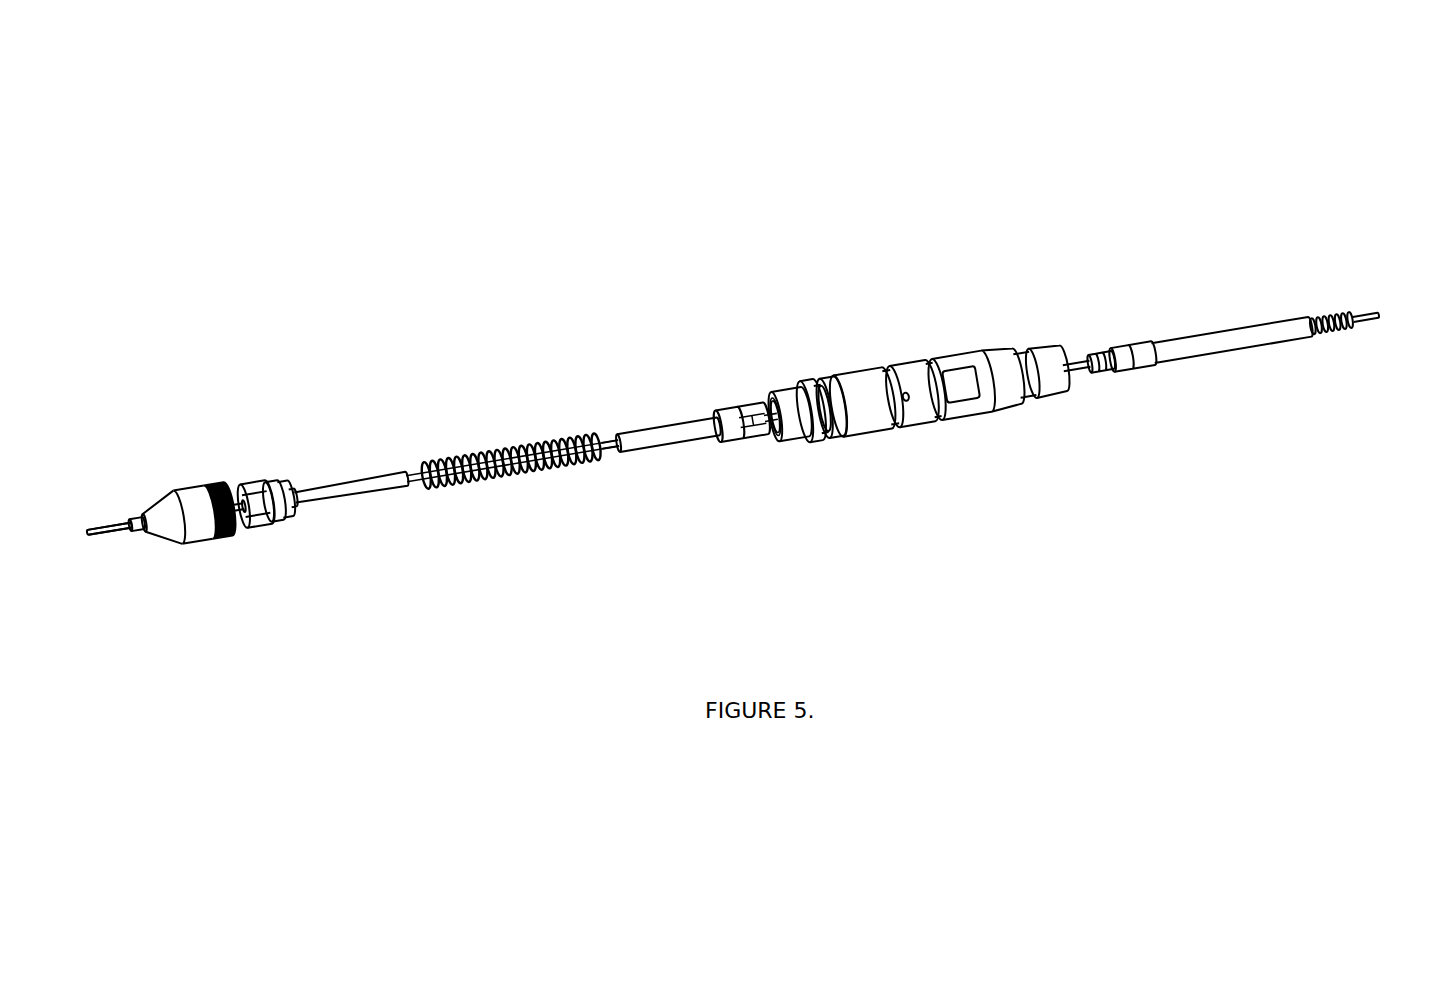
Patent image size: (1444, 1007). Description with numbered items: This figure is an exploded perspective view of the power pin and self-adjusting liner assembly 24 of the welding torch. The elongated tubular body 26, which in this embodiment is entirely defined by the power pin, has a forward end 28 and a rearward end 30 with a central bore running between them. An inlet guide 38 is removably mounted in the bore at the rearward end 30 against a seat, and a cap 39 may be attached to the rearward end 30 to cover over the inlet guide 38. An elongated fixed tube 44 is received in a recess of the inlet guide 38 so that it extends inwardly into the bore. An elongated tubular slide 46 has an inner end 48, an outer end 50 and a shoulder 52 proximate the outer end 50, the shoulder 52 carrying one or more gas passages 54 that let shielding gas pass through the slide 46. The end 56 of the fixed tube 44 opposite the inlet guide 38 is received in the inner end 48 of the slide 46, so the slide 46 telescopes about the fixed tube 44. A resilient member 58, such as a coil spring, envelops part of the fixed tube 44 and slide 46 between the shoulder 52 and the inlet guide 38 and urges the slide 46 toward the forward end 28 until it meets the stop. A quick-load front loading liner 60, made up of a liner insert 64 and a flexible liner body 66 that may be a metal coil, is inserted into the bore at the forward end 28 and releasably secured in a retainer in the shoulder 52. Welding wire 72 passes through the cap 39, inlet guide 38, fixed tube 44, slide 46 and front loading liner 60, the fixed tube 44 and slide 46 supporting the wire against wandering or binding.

The self-adjusting liner assembly 24 is at (647, 164).
The tubular body 26 is at (860, 344).
The forward end 28 is at (1067, 328).
The rearward end 30 is at (771, 364).
The inlet guide 38 is at (273, 456).
The cap 39 is at (183, 456).
The fixed tube 44 is at (343, 456).
The tubular slide 46 is at (671, 402).
The inner end 48 is at (603, 410).
The outer end 50 is at (776, 451).
The shoulder 52 is at (712, 393).
The gas passage 54 is at (742, 432).
The end of the fixed tube 56 is at (412, 457).
The resilient member 58 is at (456, 482).
The front loading liner 60 is at (1191, 314).
The liner insert 64 is at (1099, 333).
The liner body 66 is at (1346, 286).
The welding wire 72 is at (101, 487).